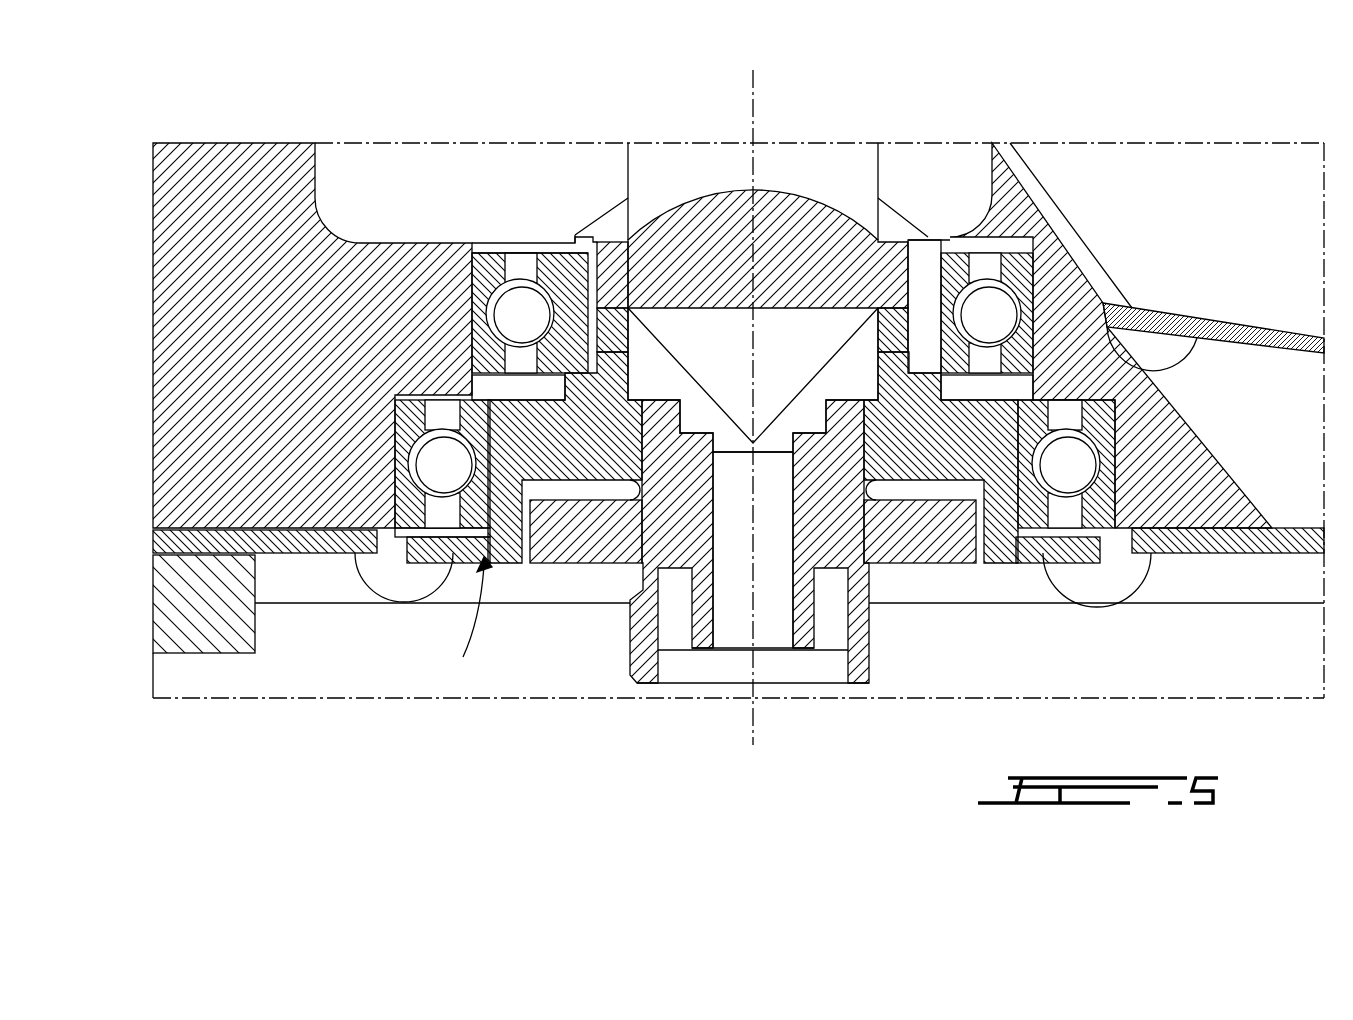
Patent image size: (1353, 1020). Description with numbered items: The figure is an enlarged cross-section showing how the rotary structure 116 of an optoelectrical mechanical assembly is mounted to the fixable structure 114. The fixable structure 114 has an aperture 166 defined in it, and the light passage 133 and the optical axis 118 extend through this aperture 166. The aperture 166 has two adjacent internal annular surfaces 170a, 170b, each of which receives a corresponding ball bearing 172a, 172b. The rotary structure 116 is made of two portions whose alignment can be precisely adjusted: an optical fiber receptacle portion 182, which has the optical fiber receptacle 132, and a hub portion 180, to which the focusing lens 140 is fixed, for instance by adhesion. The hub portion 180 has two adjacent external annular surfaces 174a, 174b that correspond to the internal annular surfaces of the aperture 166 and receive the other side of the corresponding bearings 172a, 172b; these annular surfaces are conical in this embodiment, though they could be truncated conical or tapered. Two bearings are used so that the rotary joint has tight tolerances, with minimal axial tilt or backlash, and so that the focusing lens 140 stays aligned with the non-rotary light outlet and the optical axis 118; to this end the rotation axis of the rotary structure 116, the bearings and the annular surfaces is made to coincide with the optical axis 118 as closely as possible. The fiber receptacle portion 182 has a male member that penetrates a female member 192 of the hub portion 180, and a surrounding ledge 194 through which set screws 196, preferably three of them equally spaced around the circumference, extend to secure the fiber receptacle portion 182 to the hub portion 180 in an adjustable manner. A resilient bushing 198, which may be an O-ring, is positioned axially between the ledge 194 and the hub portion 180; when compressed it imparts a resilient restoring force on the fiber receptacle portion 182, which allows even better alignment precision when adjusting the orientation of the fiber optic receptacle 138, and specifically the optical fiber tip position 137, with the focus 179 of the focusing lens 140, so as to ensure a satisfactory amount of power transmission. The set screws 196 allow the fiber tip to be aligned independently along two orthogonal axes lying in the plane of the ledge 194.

The fixable structure 114 is at (247, 170).
The rotary structure 116 is at (461, 625).
The optical axis 118 is at (753, 93).
The optical fiber receptacle 132 is at (640, 683).
The light passage 133 is at (793, 347).
The optical fiber tip position 137 is at (740, 455).
The fiber optic receptacle 138 is at (795, 545).
The focusing lens 140 is at (700, 225).
The aperture 166 is at (483, 250).
The internal annular surface 170a is at (470, 387).
The internal annular surface 170b is at (395, 518).
The ball bearing 172a is at (513, 305).
The ball bearing 172b is at (425, 458).
The external annular surface 174a is at (560, 248).
The external annular surface 174b is at (510, 552).
The focus 179 is at (740, 233).
The hub portion 180 is at (455, 557).
The optical fiber receptacle portion 182 is at (597, 547).
The female member 192 is at (1025, 300).
The ledge 194 is at (550, 540).
The set screw 196 is at (993, 540).
The resilient bushing 198 is at (880, 490).